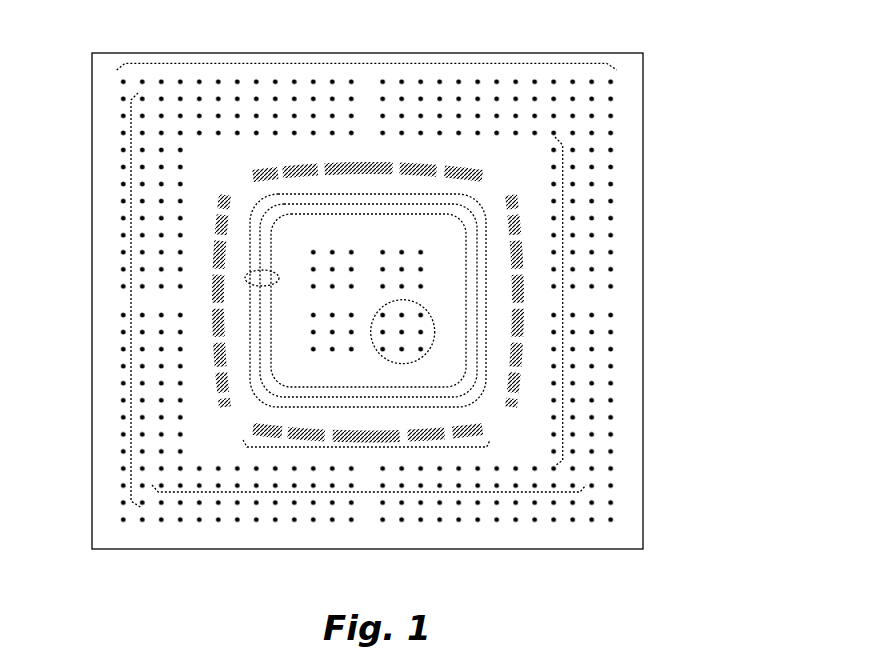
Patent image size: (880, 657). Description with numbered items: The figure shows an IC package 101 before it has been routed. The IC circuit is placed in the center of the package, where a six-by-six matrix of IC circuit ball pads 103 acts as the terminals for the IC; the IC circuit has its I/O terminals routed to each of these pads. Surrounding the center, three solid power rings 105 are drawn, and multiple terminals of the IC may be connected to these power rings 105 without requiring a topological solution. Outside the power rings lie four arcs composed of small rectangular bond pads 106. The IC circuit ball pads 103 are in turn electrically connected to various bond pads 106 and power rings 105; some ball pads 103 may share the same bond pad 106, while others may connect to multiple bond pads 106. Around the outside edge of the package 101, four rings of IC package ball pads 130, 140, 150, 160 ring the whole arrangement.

The IC package 101 is at (647, 95).
The IC circuit ball pads 103 is at (425, 350).
The power rings 105 is at (250, 272).
The bond pads 106 is at (463, 448).
The IC package ball pads 130 is at (563, 298).
The IC package ball pads 140 is at (368, 492).
The IC package ball pads 150 is at (131, 301).
The IC package ball pads 160 is at (366, 64).